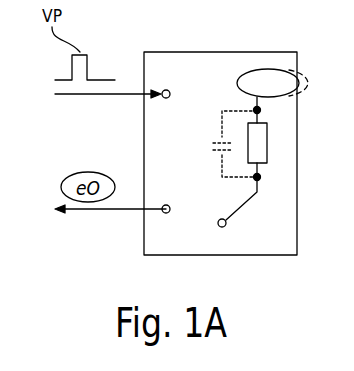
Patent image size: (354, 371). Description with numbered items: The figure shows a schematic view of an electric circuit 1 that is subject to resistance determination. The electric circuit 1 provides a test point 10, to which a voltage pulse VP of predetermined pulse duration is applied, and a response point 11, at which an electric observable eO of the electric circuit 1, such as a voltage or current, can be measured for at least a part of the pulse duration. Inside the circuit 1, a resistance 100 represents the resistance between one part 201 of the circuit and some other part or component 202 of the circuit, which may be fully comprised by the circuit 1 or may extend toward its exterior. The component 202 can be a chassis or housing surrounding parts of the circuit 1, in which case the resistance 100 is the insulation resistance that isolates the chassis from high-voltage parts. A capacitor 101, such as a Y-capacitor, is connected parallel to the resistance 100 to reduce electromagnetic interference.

The electric circuit 1 is at (210, 52).
The test point 10 is at (165, 90).
The response point 11 is at (165, 205).
The resistance 100 is at (248, 131).
The capacitor 101 is at (222, 161).
The part of the circuit 201 is at (226, 227).
The other part or component 202 is at (275, 69).